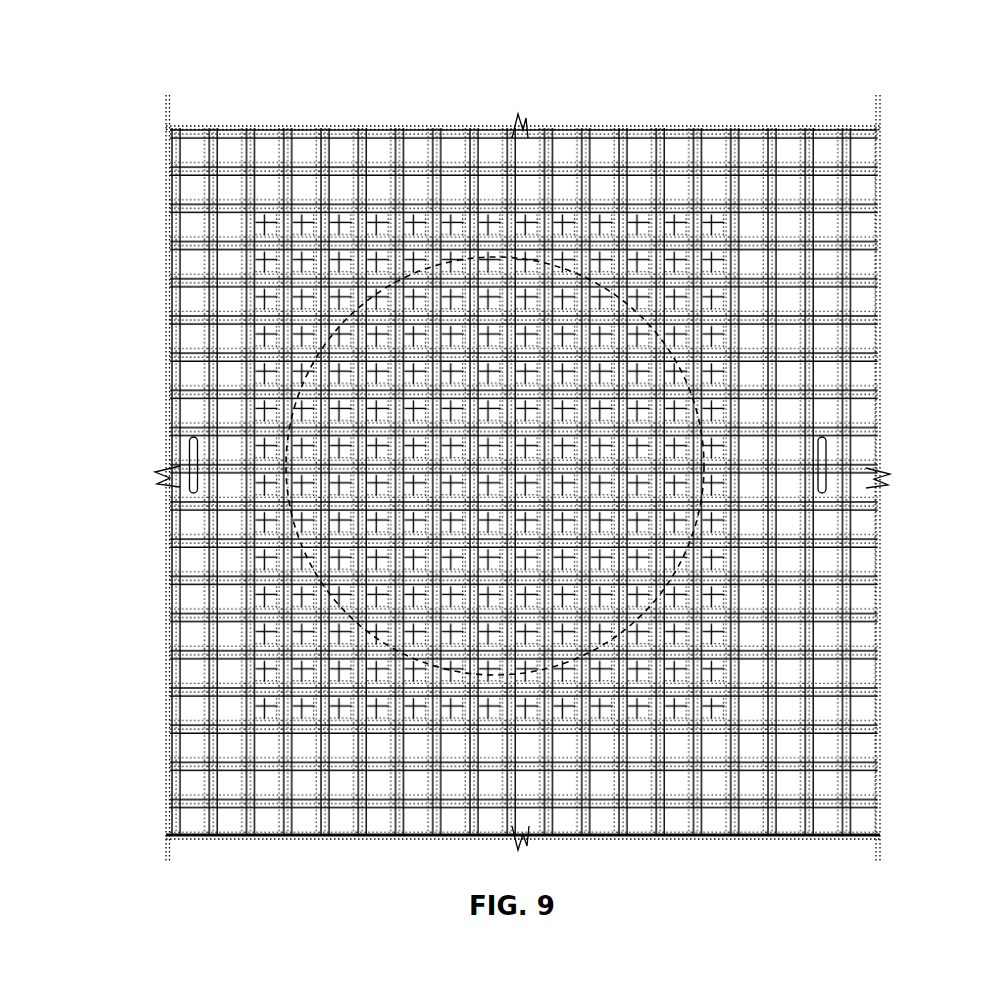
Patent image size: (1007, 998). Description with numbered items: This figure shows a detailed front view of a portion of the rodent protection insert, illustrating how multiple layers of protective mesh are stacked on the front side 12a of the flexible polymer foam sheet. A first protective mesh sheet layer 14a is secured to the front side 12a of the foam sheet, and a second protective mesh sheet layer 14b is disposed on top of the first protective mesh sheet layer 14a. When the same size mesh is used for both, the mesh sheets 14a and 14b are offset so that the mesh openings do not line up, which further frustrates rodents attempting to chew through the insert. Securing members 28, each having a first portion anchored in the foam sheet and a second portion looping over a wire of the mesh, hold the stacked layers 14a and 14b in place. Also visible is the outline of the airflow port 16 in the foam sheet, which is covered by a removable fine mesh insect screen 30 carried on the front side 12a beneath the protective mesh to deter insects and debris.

The front side 12a is at (236, 150).
The first protective mesh sheet layer 14a is at (218, 803).
The second protective mesh sheet layer 14b is at (176, 782).
The airflow port 16 is at (496, 378).
The securing member 28 is at (188, 452).
The insect screen 30 is at (678, 232).